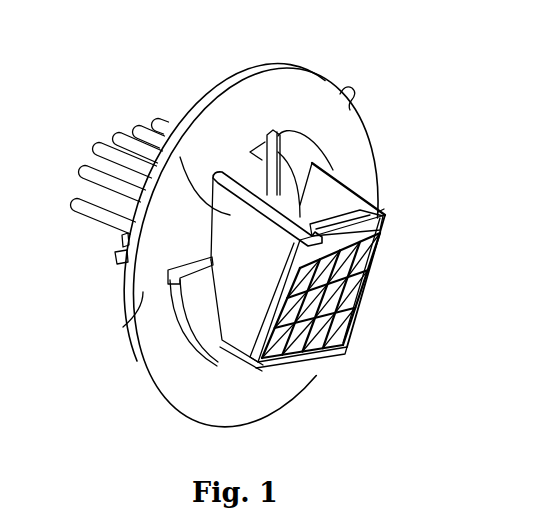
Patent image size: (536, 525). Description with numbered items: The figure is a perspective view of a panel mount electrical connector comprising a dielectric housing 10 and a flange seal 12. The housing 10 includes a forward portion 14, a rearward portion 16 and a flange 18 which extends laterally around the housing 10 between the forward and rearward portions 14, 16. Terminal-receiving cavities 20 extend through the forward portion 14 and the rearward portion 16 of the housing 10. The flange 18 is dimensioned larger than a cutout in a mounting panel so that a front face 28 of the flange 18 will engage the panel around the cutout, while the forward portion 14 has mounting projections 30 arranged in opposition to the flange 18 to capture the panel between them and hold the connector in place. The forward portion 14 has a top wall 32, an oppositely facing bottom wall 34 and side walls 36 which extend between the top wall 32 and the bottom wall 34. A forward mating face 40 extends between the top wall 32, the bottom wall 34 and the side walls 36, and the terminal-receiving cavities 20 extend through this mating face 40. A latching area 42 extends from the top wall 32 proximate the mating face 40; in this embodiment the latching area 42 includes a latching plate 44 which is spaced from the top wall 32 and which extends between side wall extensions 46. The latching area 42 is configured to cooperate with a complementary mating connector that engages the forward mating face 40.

The dielectric housing 10 is at (395, 148).
The flange seal 12 is at (287, 87).
The forward portion 14 is at (368, 329).
The rearward portion 16 is at (108, 268).
The flange 18 is at (138, 350).
The terminal-receiving cavities 20 is at (350, 300).
The front face 28 is at (143, 292).
The mounting projections 30 is at (322, 133).
The top wall 32 is at (386, 221).
The bottom wall 34 is at (282, 354).
The side walls 36 is at (168, 148).
The forward mating face 40 is at (315, 358).
The latching area 42 is at (376, 201).
The latching plate 44 is at (270, 130).
The side wall extensions 46 is at (381, 254).